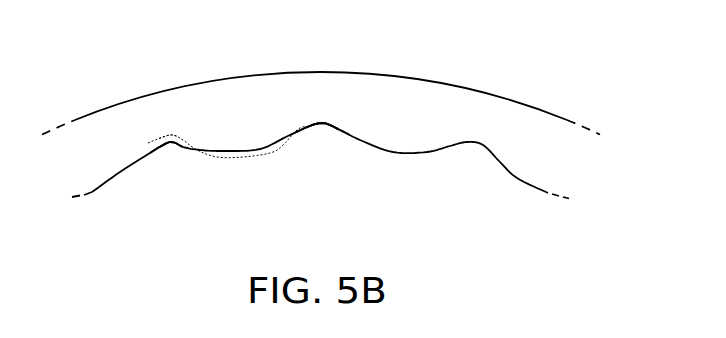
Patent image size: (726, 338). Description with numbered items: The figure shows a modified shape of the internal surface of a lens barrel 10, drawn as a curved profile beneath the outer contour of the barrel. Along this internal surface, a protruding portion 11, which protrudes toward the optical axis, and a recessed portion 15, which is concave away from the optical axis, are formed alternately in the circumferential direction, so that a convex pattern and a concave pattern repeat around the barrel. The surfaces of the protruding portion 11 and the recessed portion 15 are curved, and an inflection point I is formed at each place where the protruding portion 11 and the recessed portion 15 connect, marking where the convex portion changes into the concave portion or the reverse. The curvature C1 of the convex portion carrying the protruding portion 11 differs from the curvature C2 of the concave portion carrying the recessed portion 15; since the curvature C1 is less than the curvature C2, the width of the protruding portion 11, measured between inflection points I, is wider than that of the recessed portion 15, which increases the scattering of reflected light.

The lens barrel 10 is at (490, 118).
The protruding portion 11 is at (395, 153).
The recessed portion 15 is at (319, 125).
The curvature of the convex portion C1 is at (240, 155).
The curvature of the concave portion C2 is at (164, 135).
The inflection point I is at (150, 152).